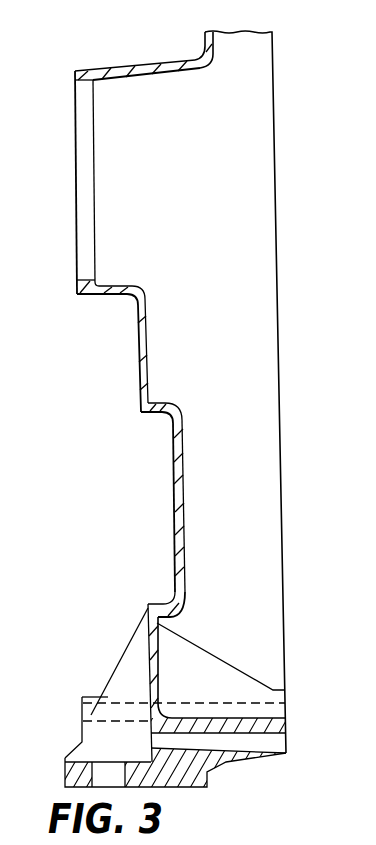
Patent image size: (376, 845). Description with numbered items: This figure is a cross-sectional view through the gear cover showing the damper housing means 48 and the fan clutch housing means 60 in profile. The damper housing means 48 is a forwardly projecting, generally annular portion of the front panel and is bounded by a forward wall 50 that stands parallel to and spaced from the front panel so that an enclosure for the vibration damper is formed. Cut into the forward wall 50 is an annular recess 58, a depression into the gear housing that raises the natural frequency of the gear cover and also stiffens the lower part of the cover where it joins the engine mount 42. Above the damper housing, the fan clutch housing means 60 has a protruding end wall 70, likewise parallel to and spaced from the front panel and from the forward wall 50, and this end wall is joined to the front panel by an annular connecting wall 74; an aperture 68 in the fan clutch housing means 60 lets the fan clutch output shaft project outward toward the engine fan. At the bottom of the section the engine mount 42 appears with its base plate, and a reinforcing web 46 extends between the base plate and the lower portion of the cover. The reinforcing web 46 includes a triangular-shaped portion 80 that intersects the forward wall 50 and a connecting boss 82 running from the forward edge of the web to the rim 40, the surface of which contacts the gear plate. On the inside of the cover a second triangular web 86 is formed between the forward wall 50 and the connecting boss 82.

The rim 40 is at (287, 723).
The engine mount 42 is at (66, 756).
The reinforcing web 46 is at (118, 681).
The damper housing means 48 is at (143, 406).
The forward wall 50 is at (150, 652).
The annular recess 58 is at (174, 535).
The fan clutch housing means 60 is at (139, 60).
The aperture 68 is at (95, 278).
The protruding end wall 70 is at (74, 75).
The annular connecting wall 74 is at (171, 62).
The triangular-shaped portion 80 is at (148, 678).
The connecting boss 82 is at (82, 697).
The second triangular web 86 is at (198, 662).